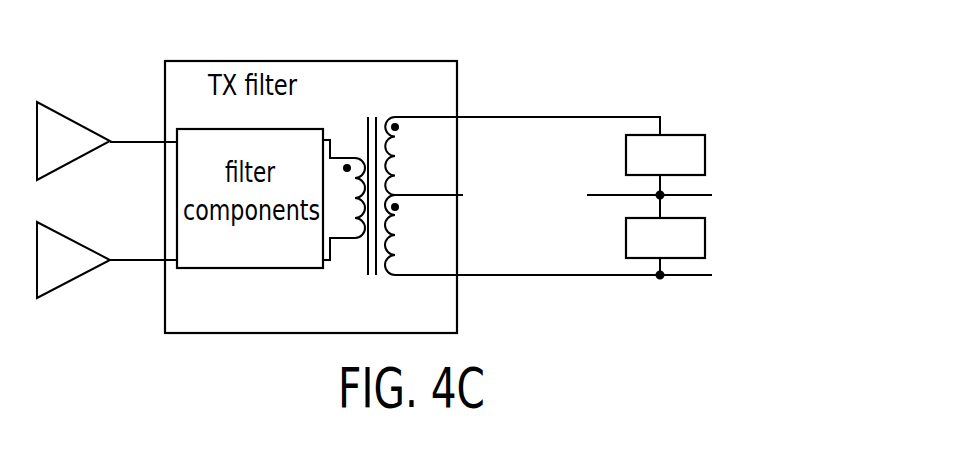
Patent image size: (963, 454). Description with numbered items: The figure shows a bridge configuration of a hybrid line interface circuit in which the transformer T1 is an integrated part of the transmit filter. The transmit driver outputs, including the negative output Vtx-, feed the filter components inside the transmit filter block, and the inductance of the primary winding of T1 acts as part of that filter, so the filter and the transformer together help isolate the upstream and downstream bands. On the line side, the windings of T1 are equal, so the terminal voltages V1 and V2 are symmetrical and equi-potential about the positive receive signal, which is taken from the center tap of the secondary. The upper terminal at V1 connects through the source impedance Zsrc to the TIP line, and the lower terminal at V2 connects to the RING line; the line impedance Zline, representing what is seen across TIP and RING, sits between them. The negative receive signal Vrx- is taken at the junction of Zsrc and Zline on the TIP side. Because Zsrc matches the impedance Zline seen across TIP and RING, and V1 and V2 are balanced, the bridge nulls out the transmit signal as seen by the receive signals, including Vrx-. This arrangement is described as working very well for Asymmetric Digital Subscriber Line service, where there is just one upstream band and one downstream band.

The transformer T1 is at (360, 179).
The first line side winding voltage V1 is at (436, 102).
The second line side winding voltage V2 is at (436, 294).
The negative transmit driver output Vtx- is at (135, 243).
The negative receive signal Vrx- is at (578, 193).
The source impedance Zsrc is at (665, 155).
The line impedance Zline is at (665, 238).
The tip line terminal TIP is at (719, 195).
The ring line terminal RING is at (731, 275).